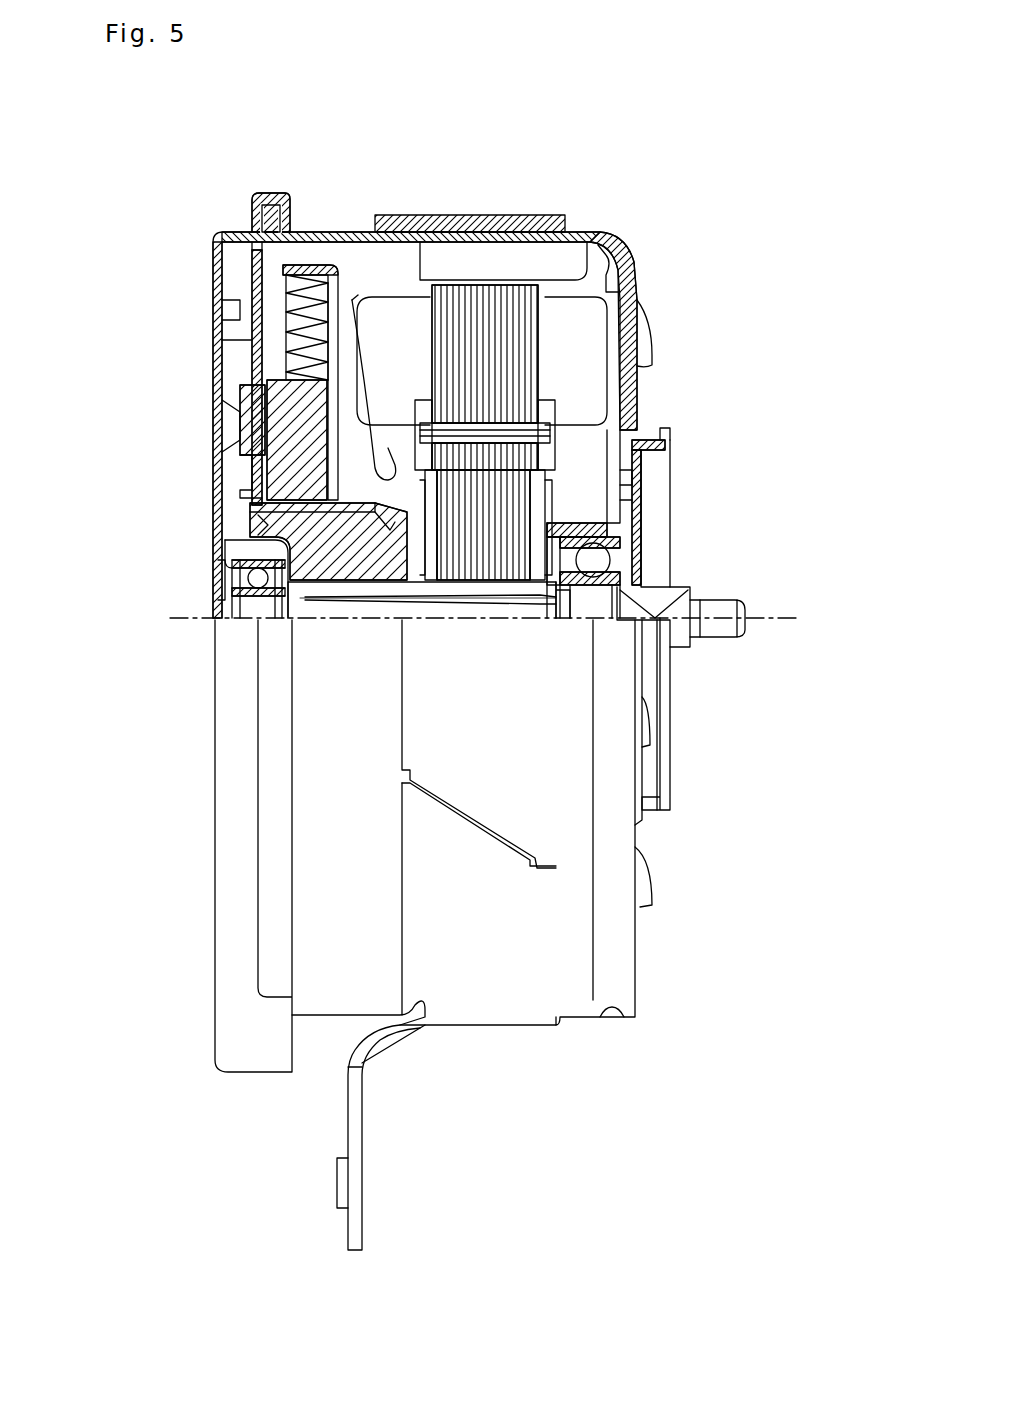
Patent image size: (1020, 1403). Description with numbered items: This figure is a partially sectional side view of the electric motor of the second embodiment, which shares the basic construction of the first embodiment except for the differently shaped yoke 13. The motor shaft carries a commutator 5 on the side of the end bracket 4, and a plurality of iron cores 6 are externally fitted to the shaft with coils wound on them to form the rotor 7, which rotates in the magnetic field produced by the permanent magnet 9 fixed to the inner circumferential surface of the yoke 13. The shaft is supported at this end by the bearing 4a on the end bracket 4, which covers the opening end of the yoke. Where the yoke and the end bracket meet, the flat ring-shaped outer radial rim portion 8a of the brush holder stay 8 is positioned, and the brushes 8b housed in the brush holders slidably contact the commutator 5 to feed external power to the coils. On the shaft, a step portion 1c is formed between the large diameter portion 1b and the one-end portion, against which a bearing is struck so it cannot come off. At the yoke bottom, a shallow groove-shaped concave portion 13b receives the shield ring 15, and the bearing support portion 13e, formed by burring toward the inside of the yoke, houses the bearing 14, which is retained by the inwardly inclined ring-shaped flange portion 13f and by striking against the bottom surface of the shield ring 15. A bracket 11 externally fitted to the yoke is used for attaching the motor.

The end bracket 4 is at (195, 212).
The bearing 4a is at (265, 582).
The commutator 5 is at (290, 530).
The iron cores 6 is at (510, 305).
The rotor 7 is at (388, 285).
The brush holder stay 8 is at (260, 343).
The outer radial rim portion 8a is at (312, 270).
The brushes 8b is at (290, 428).
The permanent magnet 9 is at (469, 265).
The bracket 11 is at (556, 212).
The yoke 13 is at (352, 200).
The concave portion 13b is at (665, 458).
The bearing support portion 13e is at (640, 520).
The flange portion 13f is at (565, 505).
The bearing 14 is at (640, 585).
The shield ring 15 is at (640, 432).
The large diameter portion 1b is at (475, 600).
The step portion 1c is at (565, 620).